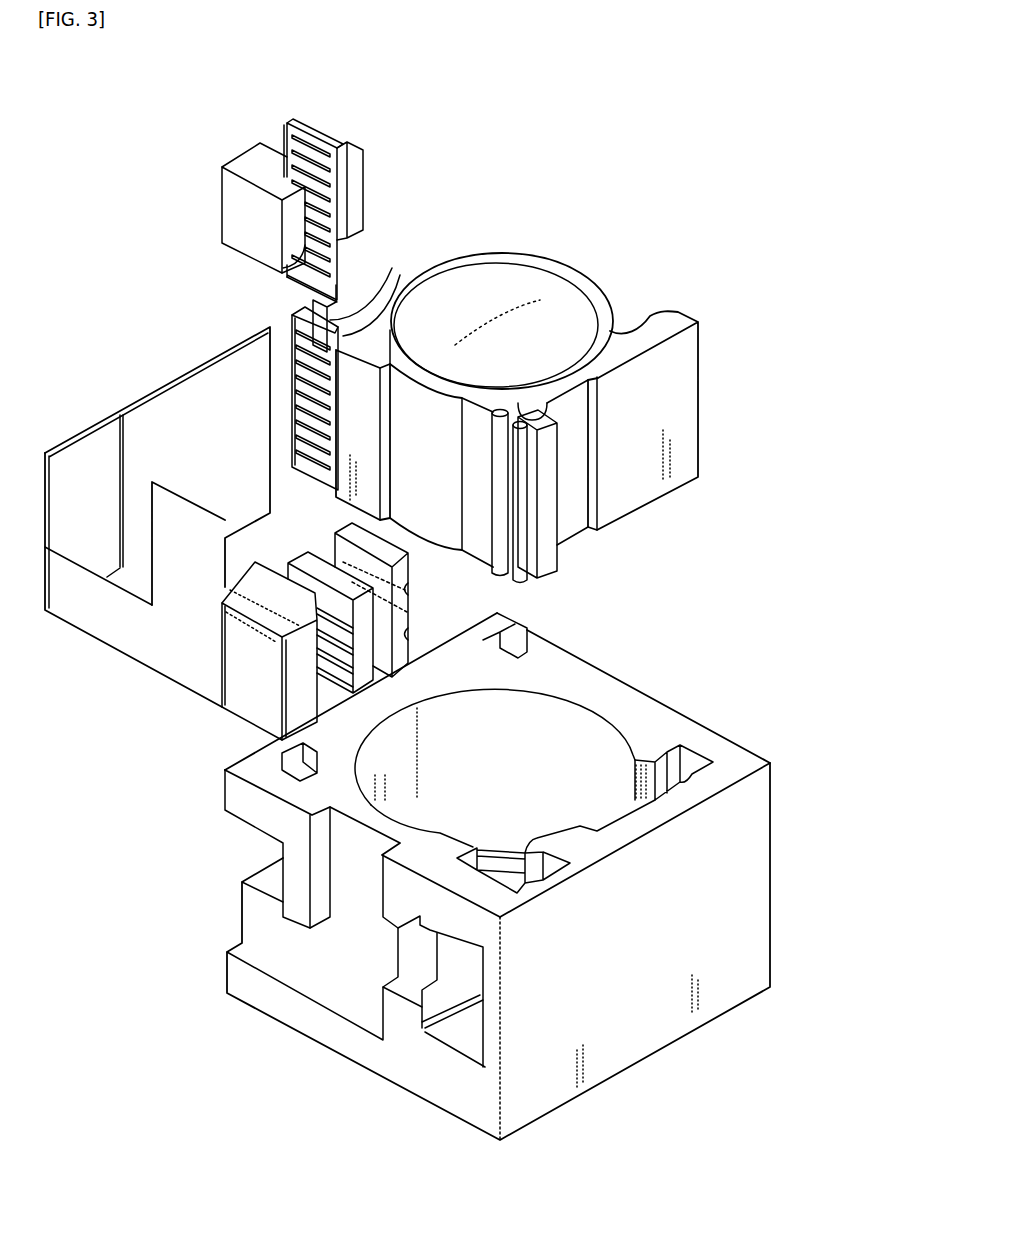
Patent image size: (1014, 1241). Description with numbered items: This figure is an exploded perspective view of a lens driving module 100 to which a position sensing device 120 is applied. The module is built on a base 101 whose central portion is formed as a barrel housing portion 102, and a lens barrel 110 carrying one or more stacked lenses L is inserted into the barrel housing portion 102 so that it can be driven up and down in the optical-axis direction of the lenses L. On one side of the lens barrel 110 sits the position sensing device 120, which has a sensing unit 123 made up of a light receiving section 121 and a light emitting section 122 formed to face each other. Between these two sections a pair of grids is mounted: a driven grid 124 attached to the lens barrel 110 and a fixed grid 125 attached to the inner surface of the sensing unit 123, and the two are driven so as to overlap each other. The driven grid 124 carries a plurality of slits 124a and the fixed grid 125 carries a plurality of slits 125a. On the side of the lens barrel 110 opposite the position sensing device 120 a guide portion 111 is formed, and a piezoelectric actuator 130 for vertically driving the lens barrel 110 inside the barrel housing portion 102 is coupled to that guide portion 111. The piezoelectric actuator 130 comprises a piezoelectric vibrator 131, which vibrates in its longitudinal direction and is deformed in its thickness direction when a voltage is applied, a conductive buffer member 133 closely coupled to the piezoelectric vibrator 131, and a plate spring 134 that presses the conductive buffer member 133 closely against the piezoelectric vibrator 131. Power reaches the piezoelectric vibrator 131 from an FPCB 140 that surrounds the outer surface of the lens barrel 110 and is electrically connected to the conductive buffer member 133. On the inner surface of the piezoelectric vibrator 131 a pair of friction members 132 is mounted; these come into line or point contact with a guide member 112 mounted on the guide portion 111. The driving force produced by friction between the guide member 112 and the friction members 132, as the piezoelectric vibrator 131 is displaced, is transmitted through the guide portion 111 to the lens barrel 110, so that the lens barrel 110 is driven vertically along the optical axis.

The lens driving module 100 is at (681, 225).
The base 101 is at (653, 1038).
The barrel housing portion 102 is at (563, 728).
The lens barrel 110 is at (613, 330).
The guide portion 111 is at (553, 543).
The guide member 112 is at (523, 570).
The position sensing device 120 is at (364, 181).
The light receiving section 121 is at (348, 147).
The light emitting section 122 is at (276, 178).
The sensing unit 123 is at (367, 86).
The driven grid 124 is at (315, 472).
The slits 124a is at (318, 343).
The fixed grid 125 is at (300, 278).
The slits 125a is at (283, 268).
The piezoelectric actuator 130 is at (224, 721).
The piezoelectric vibrator 131 is at (313, 567).
The friction members 132 is at (410, 594).
The conductive buffer member 133 is at (233, 665).
The plate spring 134 is at (222, 662).
The FPCB 140 is at (173, 400).
The lenses L is at (517, 290).